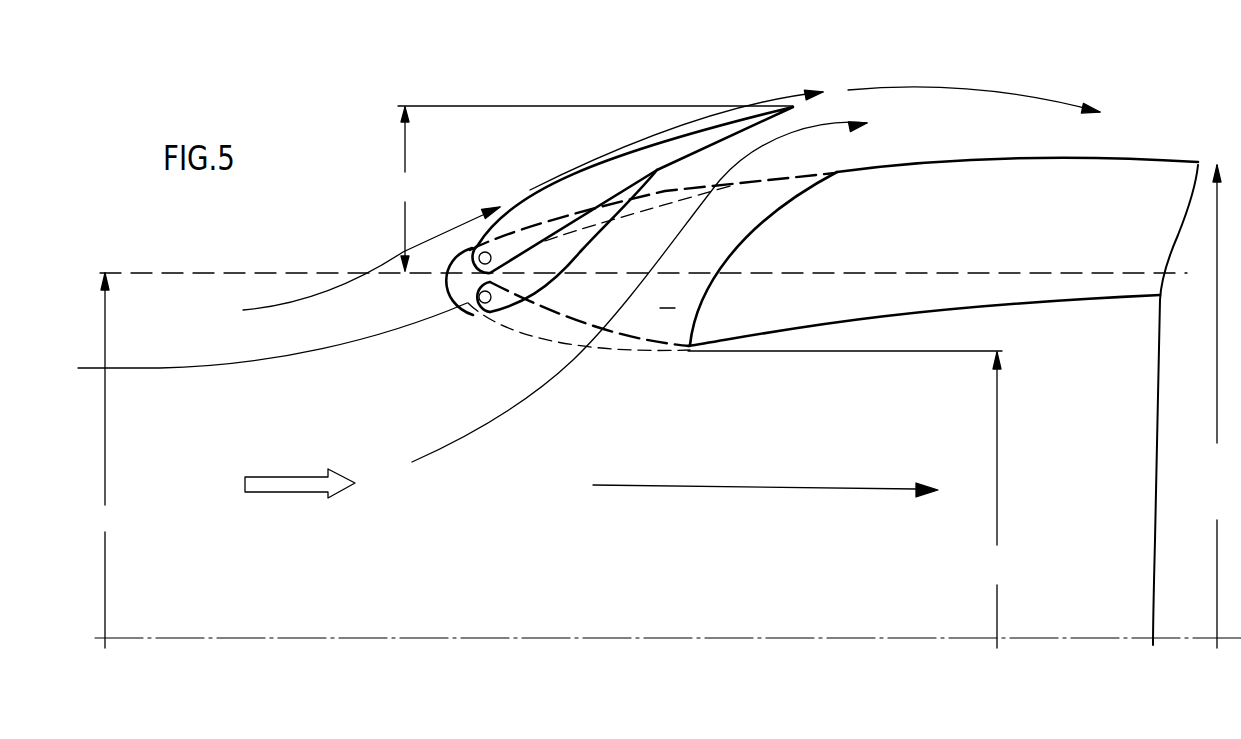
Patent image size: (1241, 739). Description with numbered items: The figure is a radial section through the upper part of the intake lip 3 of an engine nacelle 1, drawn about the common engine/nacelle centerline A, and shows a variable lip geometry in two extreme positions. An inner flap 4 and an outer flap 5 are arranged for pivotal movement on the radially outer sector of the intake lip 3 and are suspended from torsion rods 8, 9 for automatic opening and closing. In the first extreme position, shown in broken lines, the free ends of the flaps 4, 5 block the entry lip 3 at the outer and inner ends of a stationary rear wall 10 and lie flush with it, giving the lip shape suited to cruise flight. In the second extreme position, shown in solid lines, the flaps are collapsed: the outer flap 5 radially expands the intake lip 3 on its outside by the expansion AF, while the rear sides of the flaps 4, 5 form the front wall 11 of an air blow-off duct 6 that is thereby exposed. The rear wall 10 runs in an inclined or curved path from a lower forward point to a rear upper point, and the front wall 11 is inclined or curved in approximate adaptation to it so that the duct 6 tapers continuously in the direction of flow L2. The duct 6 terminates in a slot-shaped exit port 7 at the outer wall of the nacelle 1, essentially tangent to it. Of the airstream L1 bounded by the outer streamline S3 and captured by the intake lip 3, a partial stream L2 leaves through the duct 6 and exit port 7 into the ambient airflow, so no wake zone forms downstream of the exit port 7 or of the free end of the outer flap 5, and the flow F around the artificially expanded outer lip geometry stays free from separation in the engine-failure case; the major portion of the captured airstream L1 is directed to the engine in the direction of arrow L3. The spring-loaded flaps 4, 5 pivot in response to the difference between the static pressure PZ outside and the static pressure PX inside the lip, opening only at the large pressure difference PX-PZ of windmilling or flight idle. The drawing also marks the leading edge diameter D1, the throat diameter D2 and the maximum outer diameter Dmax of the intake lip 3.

The nacelle 1 is at (1160, 150).
The intake lip 3 is at (771, 307).
The inner flap 4 is at (562, 252).
The outer flap 5 is at (573, 200).
The air blow-off duct 6 is at (667, 297).
The exit port 7 is at (803, 128).
The torsion rod 8 is at (472, 302).
The torsion rod 9 is at (474, 251).
The rear wall 10 is at (755, 231).
The front wall 11 is at (687, 156).
The captured airstream L1 is at (288, 483).
The partial stream L2 is at (495, 420).
The flow direction to engine L3 is at (707, 488).
The outer streamline S3 is at (142, 367).
The engine/nacelle centerline A is at (833, 636).
The radial expansion AF is at (404, 189).
The leading edge diameter D1 is at (105, 460).
The throat diameter D2 is at (1000, 500).
The maximum outer diameter Dmax is at (1213, 406).
The inside static pressure PX is at (816, 379).
The outside static pressure PZ is at (641, 142).
The external flow F is at (303, 297).